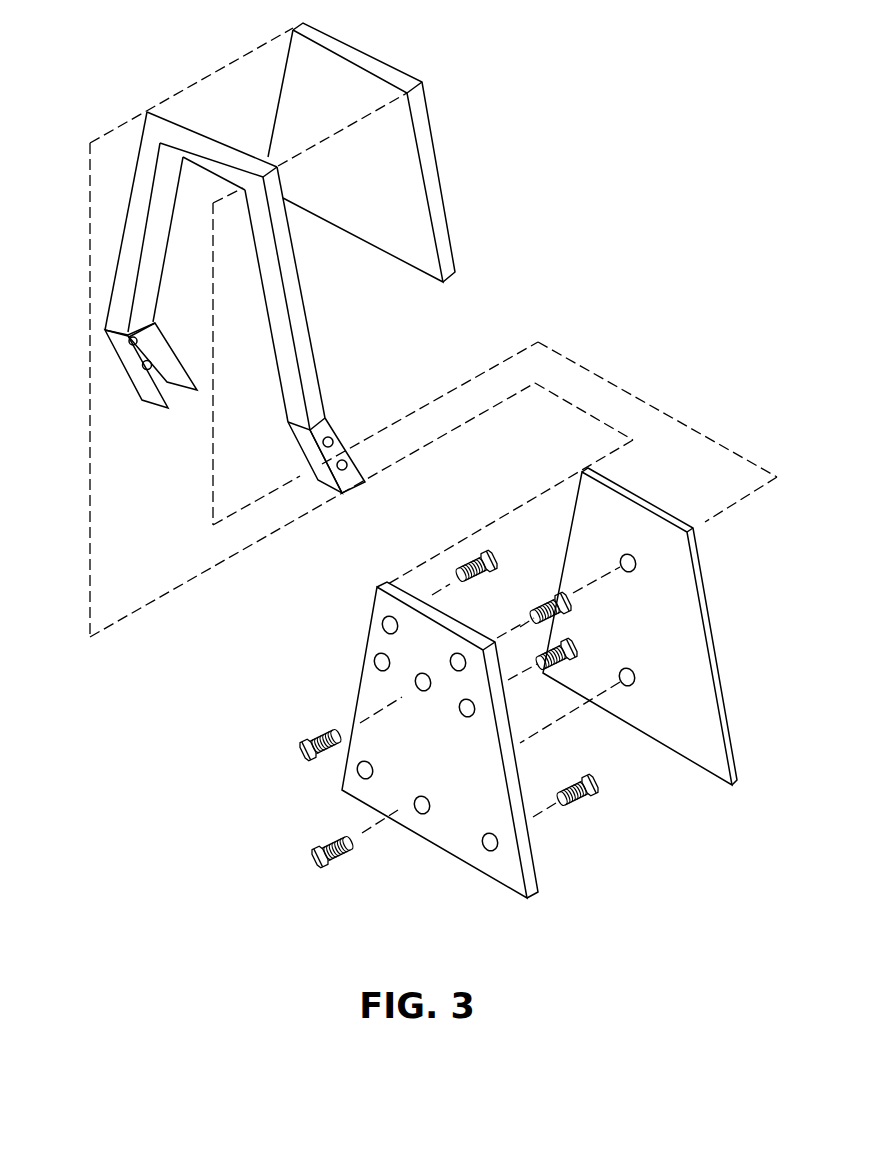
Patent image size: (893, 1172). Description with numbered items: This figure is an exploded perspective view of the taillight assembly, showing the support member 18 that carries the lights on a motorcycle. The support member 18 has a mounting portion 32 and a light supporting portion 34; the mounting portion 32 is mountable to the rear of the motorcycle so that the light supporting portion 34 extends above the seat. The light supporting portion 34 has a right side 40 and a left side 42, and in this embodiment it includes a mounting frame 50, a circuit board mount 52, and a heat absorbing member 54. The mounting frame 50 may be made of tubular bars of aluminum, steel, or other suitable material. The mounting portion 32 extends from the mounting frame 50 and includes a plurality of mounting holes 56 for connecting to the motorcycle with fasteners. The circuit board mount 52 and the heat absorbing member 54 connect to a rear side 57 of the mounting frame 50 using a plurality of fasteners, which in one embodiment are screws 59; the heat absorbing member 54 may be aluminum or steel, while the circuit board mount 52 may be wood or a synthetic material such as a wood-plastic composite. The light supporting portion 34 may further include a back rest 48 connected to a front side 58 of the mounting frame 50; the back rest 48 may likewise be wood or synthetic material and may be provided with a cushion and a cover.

The support member 18 is at (570, 191).
The mounting portion 32 is at (130, 366).
The light supporting portion 34 is at (300, 278).
The right side 40 is at (302, 330).
The left side 42 is at (135, 169).
The back rest 48 is at (378, 60).
The mounting frame 50 is at (148, 110).
The circuit board mount 52 is at (530, 870).
The heat absorbing member 54 is at (733, 755).
The mounting holes 56 is at (333, 440).
The rear side 57 is at (298, 405).
The front side 58 is at (295, 242).
The screws 59 is at (598, 793).